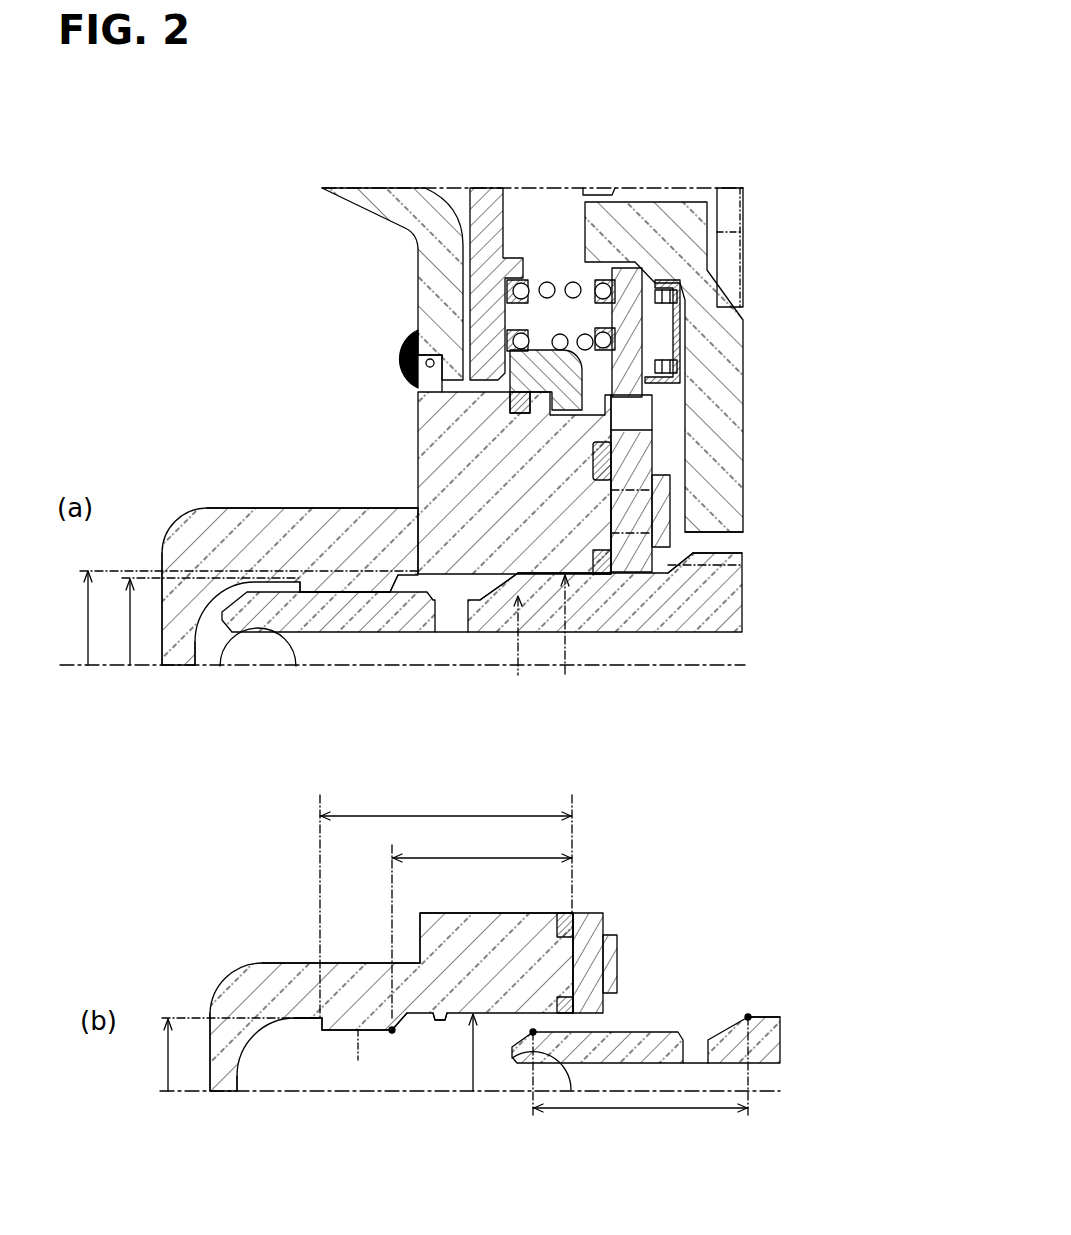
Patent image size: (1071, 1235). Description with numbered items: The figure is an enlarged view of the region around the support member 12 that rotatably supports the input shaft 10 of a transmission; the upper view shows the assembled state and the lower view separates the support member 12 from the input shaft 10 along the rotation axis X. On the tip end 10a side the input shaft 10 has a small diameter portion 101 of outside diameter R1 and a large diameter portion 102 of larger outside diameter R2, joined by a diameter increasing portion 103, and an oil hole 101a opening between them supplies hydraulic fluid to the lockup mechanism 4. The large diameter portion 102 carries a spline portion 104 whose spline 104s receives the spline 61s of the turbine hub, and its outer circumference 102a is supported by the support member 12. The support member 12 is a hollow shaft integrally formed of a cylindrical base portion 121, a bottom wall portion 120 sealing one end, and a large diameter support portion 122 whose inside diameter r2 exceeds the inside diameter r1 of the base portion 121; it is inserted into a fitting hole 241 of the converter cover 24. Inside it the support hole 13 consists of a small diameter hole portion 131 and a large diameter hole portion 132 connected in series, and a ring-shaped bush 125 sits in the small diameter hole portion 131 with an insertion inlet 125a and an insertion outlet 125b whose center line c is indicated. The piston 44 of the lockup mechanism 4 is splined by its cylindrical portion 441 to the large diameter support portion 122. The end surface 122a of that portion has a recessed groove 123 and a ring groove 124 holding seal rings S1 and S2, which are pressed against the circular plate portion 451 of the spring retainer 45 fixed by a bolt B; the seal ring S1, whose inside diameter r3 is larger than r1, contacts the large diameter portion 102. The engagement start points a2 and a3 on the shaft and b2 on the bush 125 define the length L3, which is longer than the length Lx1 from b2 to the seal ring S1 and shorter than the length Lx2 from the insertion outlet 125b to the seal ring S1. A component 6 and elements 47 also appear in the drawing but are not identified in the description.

The lockup mechanism 4 is at (542, 233).
The housing 6 is at (648, 172).
The input shaft 10 is at (514, 857).
The tip end 10a is at (215, 618).
The support member 12 is at (388, 367).
The support hole 13 is at (370, 722).
The converter cover 24 is at (372, 205).
The piston 44 is at (486, 186).
The spring retainer 45 is at (661, 640).
The rolling elements (balls) 47 is at (552, 280).
The spline 61s is at (736, 540).
The small diameter portion 101 is at (252, 620).
The oil hole 101a is at (450, 632).
The large diameter portion 102 is at (637, 597).
The outer circumference 102a is at (668, 567).
The diameter increasing portion 103 is at (503, 603).
The spline portion 104 is at (717, 560).
The spline 104s is at (742, 559).
The bottom wall portion 120 is at (182, 580).
The base portion 121 is at (247, 520).
The large diameter support portion 122 is at (428, 428).
The end surface 122a is at (613, 522).
The recessed groove 123 is at (594, 556).
The ring groove 124 is at (596, 470).
The bush 125 is at (324, 596).
The insertion inlet 125a is at (392, 1031).
The insertion outlet 125b is at (320, 1030).
The small diameter hole portion 131 is at (337, 582).
The large diameter hole portion 132 is at (420, 580).
The fitting hole 241 is at (433, 358).
The cylindrical portion 441 is at (545, 372).
The circular plate portion 451 is at (645, 467).
The bolt B is at (670, 515).
The seal ring S1 is at (606, 578).
The seal ring S2 is at (604, 482).
The rotation axis X is at (413, 869).
The outside diameter of small diameter portion R1 is at (536, 635).
The outside diameter of large diameter portion R2 is at (584, 625).
The inside diameter of base portion r1 is at (222, 834).
The inside diameter of large diameter support portion r2 is at (249, 618).
The inside diameter of seal ring r3 is at (486, 1052).
The length Lx1 is at (482, 925).
The length Lx2 is at (446, 903).
The length L3 is at (640, 1126).
The engagement start point a2 is at (536, 1033).
The engagement start point a3 is at (748, 1015).
The engagement start point b2 is at (390, 1028).
The center line c is at (360, 1059).